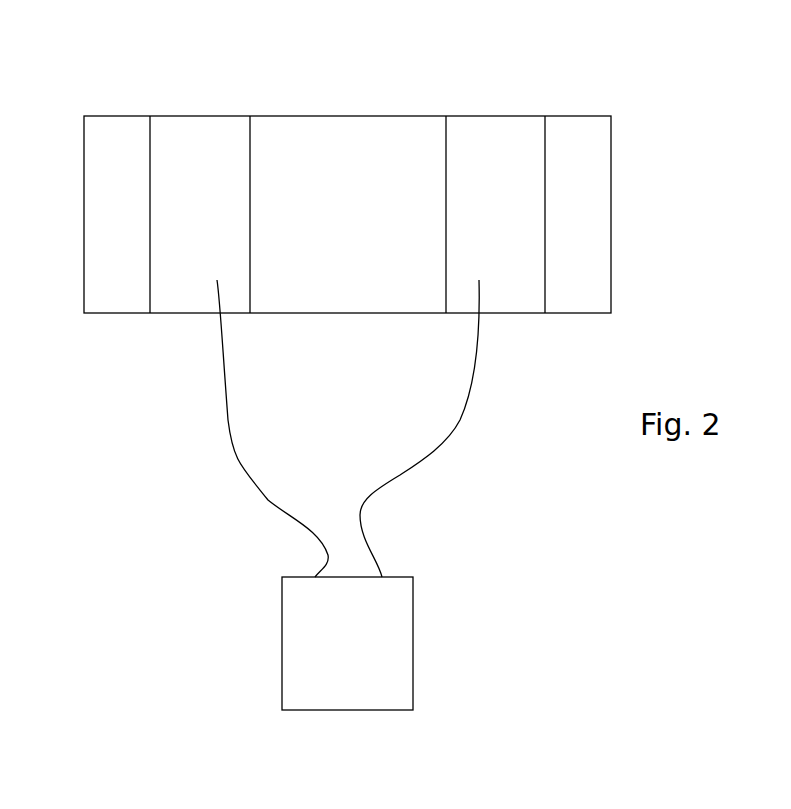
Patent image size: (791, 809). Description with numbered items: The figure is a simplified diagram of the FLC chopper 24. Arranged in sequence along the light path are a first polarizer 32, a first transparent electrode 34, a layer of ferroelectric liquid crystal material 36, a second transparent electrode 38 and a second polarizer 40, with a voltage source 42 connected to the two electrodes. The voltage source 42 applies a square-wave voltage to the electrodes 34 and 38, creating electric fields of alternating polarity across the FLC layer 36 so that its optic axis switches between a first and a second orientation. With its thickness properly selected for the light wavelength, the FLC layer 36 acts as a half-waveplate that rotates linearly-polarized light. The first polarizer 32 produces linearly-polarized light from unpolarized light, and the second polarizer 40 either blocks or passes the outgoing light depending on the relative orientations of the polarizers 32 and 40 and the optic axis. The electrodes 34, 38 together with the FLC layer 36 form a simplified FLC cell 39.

The chopper 24 is at (138, 550).
The first polarizer 32 is at (113, 127).
The first transparent electrode 34 is at (204, 134).
The layer of ferroelectric liquid crystal material 36 is at (405, 136).
The second transparent electrode 38 is at (505, 136).
The FLC cell 39 is at (351, 90).
The second polarizer 40 is at (585, 136).
The voltage source 42 is at (388, 627).